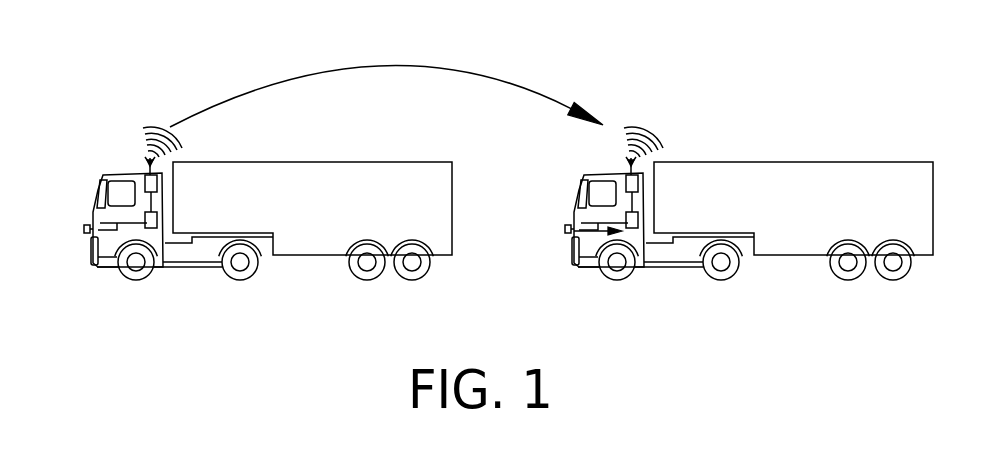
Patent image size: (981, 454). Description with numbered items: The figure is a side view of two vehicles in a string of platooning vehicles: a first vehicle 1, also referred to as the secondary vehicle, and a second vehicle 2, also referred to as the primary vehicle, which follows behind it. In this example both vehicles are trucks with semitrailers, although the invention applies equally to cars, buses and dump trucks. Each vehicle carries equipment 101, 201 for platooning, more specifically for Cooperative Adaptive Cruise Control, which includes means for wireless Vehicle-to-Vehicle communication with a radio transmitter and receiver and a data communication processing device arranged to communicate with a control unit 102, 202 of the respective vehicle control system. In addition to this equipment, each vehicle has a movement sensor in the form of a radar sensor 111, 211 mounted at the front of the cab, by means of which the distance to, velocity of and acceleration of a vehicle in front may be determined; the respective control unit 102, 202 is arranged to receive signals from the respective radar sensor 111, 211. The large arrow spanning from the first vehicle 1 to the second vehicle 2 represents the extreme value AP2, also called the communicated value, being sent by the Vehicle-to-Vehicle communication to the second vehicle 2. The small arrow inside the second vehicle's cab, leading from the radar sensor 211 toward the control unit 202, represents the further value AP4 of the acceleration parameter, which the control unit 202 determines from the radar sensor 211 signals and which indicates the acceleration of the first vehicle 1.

The first vehicle 1 is at (235, 211).
The second vehicle 2 is at (704, 212).
The equipment for platooning 101 is at (148, 172).
The control unit 102 is at (157, 224).
The radar sensor 111 is at (86, 229).
The equipment for platooning 201 is at (629, 172).
The control unit 202 is at (638, 224).
The radar sensor 211 is at (567, 229).
The extreme value AP2 is at (368, 72).
The further value of the acceleration parameter AP4 is at (593, 233).